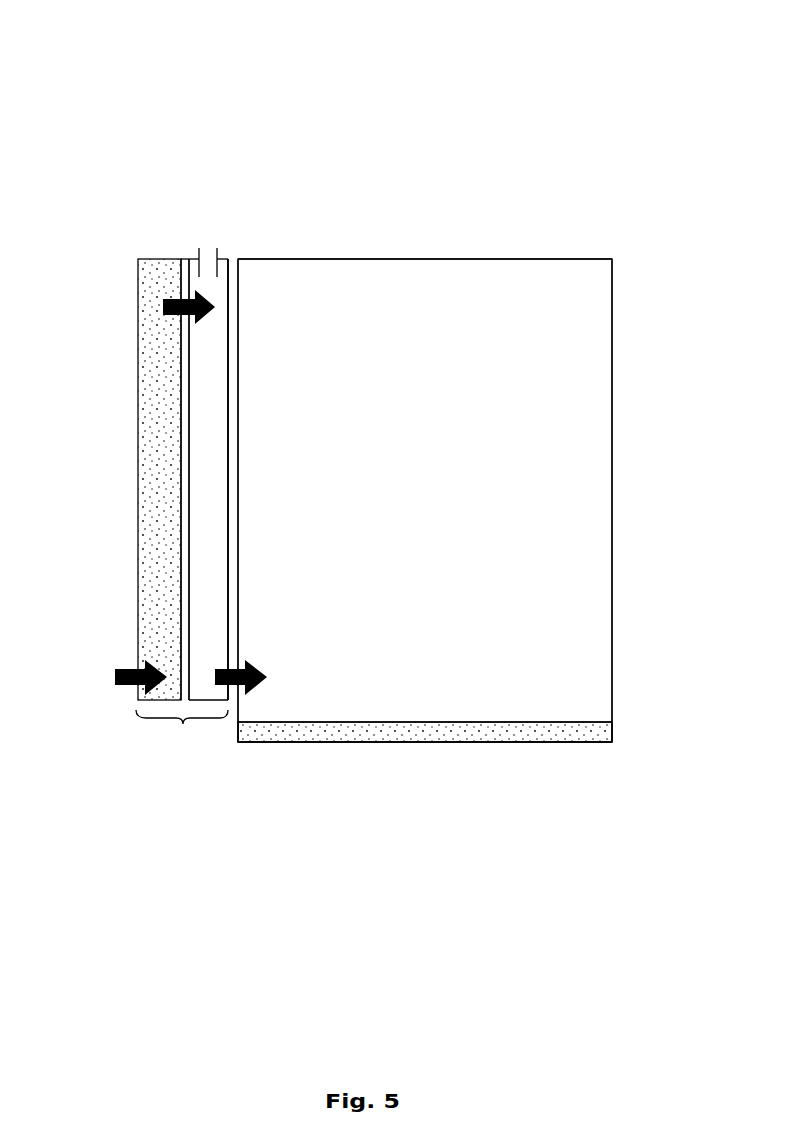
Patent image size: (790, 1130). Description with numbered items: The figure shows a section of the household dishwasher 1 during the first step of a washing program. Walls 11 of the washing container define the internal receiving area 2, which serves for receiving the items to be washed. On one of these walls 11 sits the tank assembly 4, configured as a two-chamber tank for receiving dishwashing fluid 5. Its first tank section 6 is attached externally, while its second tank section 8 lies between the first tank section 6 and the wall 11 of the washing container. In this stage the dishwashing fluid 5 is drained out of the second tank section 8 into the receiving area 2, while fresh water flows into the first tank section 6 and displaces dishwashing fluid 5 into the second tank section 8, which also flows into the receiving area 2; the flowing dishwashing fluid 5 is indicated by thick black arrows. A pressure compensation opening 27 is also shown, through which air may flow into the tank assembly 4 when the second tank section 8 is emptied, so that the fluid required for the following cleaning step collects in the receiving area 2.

The household dishwasher 1 is at (181, 100).
The receiving area 2 is at (475, 302).
The tank assembly 4 is at (182, 737).
The dishwashing fluid 5 is at (157, 453).
The first tank section 6 is at (157, 572).
The second tank section 8 is at (208, 528).
The wall 11 is at (382, 302).
The pressure compensation opening 27 is at (200, 249).